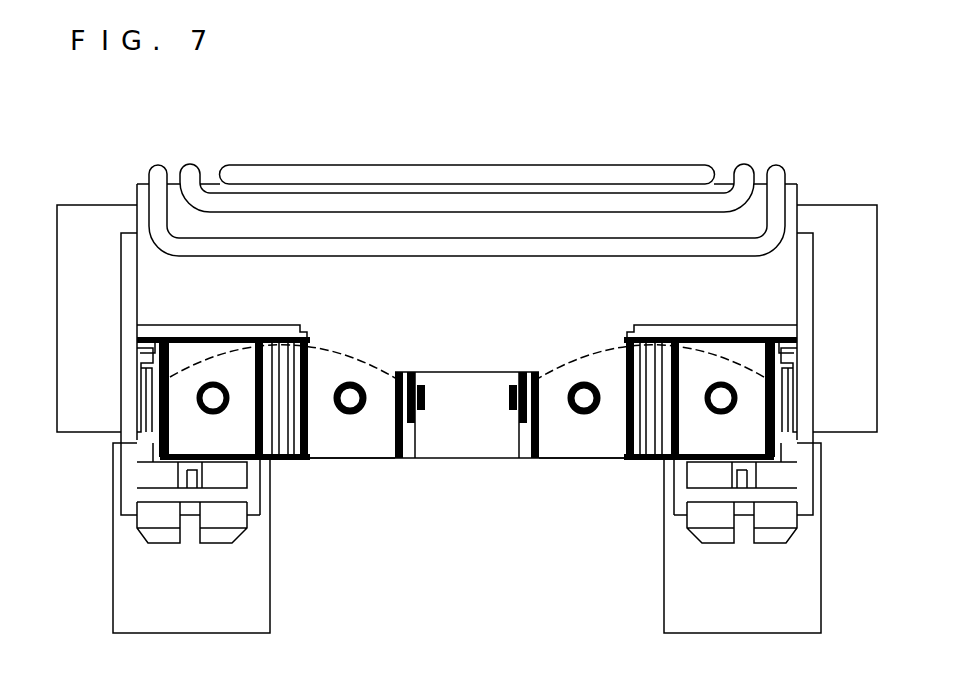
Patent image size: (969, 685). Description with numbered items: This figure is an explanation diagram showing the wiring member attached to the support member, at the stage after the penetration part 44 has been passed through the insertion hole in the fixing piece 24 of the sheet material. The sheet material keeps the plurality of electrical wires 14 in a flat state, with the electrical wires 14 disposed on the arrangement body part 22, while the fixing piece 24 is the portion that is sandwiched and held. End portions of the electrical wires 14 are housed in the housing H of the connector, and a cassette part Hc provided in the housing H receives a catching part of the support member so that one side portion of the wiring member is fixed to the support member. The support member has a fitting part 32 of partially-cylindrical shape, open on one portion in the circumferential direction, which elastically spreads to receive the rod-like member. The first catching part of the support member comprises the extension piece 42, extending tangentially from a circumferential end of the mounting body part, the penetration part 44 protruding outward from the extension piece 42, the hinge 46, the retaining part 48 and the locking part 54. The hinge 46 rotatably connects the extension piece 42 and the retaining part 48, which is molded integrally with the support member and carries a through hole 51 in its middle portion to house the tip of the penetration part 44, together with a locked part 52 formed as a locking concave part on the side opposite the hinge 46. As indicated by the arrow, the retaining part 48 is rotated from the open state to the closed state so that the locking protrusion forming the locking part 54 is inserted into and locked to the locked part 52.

The electrical wire 14 is at (383, 245).
The arrangement body part 22 is at (462, 268).
The fixing piece 24 is at (381, 447).
The fitting part 32 is at (70, 400).
The extension piece 42 is at (467, 447).
The penetration part 44 is at (350, 416).
The hinge 46 is at (289, 462).
The retaining part 48 is at (195, 355).
The through hole 51 is at (213, 402).
The locked part 52 is at (135, 433).
The locking part 54 is at (425, 380).
The housing H is at (263, 607).
The cassette part Hc is at (261, 511).